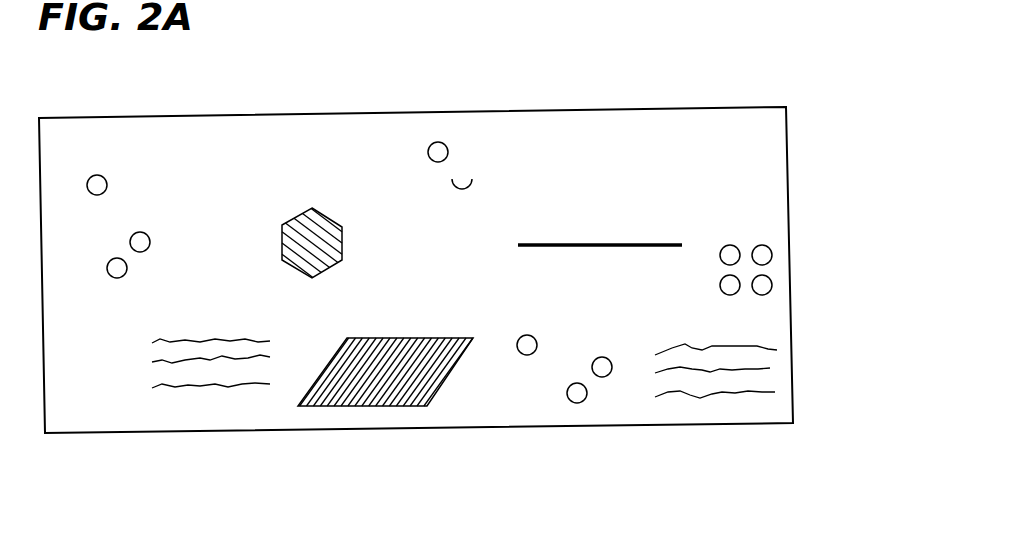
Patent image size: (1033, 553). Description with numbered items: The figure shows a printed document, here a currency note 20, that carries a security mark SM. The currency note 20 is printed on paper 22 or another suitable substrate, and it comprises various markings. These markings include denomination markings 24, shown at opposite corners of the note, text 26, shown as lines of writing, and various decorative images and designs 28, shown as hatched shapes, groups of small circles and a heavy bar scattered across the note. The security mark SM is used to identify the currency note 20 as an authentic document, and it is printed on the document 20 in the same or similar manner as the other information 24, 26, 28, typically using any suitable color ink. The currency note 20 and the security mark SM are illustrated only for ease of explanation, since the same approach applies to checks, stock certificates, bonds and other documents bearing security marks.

The currency note 20 is at (216, 98).
The security mark SM is at (137, 191).
The paper 22 is at (308, 142).
The denomination markings 24 is at (130, 413).
The text 26 is at (247, 394).
The decorative images and designs 28 is at (294, 210).